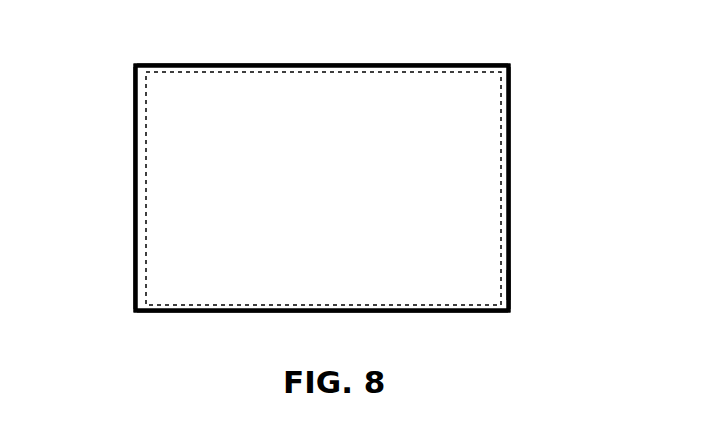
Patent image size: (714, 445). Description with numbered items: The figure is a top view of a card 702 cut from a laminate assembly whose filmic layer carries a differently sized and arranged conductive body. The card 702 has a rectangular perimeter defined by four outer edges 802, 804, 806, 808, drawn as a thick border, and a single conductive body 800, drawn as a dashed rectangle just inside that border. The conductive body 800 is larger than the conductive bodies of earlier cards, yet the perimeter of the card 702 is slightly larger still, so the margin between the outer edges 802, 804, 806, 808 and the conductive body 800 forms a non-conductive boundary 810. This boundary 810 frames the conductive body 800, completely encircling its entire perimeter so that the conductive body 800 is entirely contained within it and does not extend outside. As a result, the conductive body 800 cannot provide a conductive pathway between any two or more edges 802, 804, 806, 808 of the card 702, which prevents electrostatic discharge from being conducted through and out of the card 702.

The card 702 is at (537, 67).
The conductive body 800 is at (490, 128).
The outer edge 802 is at (519, 189).
The outer edge 804 is at (126, 189).
The outer edge 806 is at (265, 57).
The outer edge 808 is at (247, 322).
The non-conductive boundary 810 is at (506, 287).